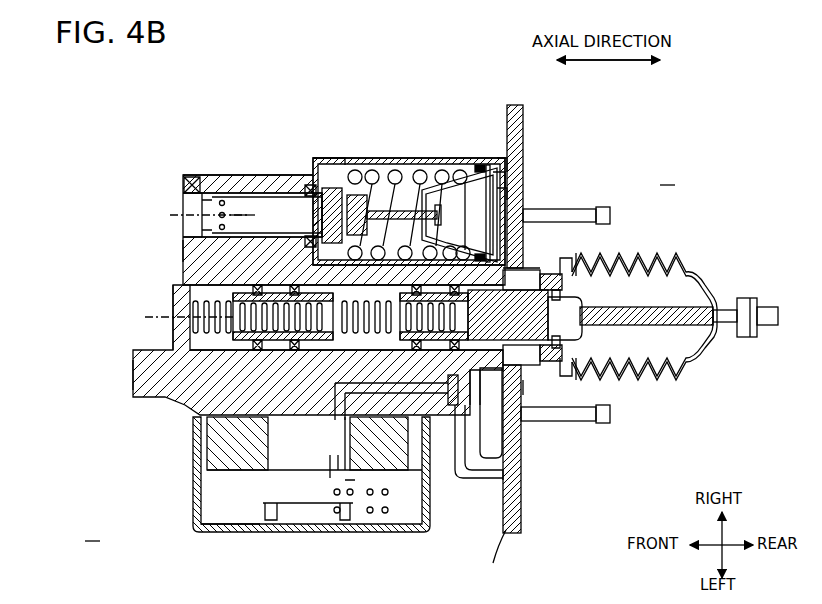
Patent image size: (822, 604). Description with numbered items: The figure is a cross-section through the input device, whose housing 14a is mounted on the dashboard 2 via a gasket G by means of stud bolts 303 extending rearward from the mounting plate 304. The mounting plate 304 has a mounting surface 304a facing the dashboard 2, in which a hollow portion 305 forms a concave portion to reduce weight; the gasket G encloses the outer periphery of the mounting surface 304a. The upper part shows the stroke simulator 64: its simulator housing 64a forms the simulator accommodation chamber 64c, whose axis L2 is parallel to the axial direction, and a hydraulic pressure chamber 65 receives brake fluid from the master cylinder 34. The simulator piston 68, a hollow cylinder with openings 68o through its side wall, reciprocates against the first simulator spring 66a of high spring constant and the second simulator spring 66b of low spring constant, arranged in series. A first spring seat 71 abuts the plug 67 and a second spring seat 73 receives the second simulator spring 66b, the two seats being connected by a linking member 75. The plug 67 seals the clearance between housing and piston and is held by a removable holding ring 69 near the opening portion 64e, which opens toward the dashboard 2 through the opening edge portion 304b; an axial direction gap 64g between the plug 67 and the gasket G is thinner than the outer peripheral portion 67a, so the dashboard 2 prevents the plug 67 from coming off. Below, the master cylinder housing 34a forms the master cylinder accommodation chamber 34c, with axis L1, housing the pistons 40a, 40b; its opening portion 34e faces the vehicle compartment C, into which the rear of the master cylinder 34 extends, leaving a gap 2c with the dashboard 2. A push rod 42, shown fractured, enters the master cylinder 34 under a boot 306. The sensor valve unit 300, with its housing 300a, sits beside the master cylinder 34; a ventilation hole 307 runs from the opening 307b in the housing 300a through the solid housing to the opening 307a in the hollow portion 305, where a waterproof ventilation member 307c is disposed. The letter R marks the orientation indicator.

The housing 14a is at (144, 130).
The simulator piston 68 is at (235, 190).
The openings 68o is at (182, 227).
The hydraulic pressure chamber 65 is at (183, 180).
The stroke simulator 64 is at (282, 172).
The simulator housing 64a is at (315, 163).
The simulator accommodation chamber 64c is at (270, 185).
The opening portion 64e is at (518, 162).
The axial direction gap 64g is at (513, 200).
The second spring seat 73 is at (352, 180).
The linking member 75 is at (408, 210).
The first simulator spring 66a is at (428, 162).
The second simulator spring 66b is at (383, 162).
The plug 67 is at (495, 185).
The outer peripheral portion 67a is at (505, 178).
The first spring seat 71 is at (483, 165).
The holding ring 69 is at (483, 165).
The dashboard 2 is at (527, 112).
The gap 2c is at (513, 388).
The stud bolts 303 is at (612, 215).
The mounting plate 304 is at (500, 480).
The mounting surface 304a is at (505, 477).
The opening edge portion 304b is at (522, 266).
The hollow portion 305 is at (492, 448).
The master cylinder 34 is at (540, 269).
The master cylinder housing 34a is at (180, 262).
The master cylinder accommodation chamber 34c is at (174, 282).
The opening portion 34e is at (565, 343).
The piston 40a is at (563, 299).
The piston 40b is at (335, 355).
The push rod 42 is at (738, 298).
The boot 306 is at (703, 358).
The ventilation hole 307 is at (205, 397).
The opening 307a is at (497, 483).
The opening 307b is at (345, 420).
The waterproof ventilation member 307c is at (500, 405).
The sensor valve unit 300 is at (235, 535).
The housing 300a is at (212, 528).
The axis L1 is at (147, 316).
The axis L2 is at (160, 212).
The vehicle compartment C is at (667, 173).
The direction R is at (92, 529).
The gasket G is at (498, 557).